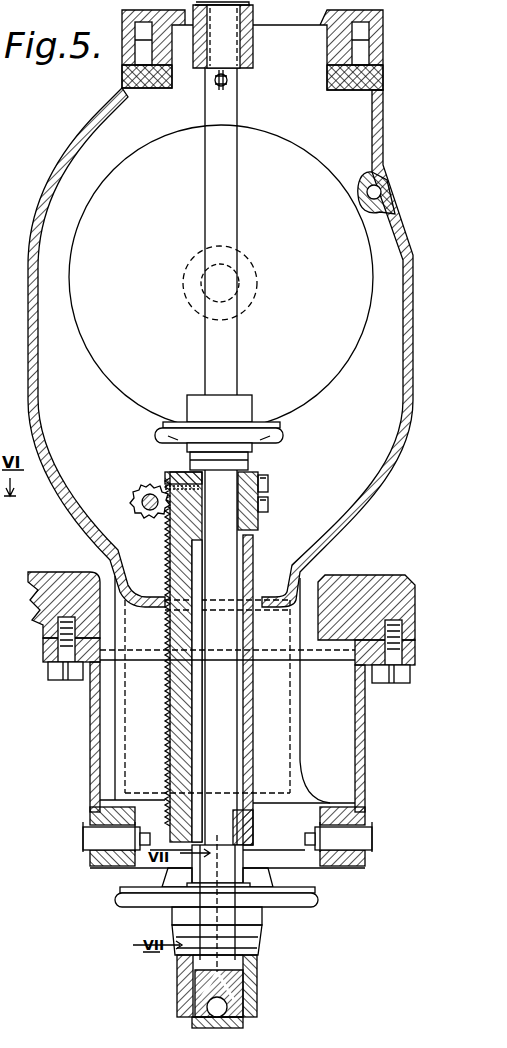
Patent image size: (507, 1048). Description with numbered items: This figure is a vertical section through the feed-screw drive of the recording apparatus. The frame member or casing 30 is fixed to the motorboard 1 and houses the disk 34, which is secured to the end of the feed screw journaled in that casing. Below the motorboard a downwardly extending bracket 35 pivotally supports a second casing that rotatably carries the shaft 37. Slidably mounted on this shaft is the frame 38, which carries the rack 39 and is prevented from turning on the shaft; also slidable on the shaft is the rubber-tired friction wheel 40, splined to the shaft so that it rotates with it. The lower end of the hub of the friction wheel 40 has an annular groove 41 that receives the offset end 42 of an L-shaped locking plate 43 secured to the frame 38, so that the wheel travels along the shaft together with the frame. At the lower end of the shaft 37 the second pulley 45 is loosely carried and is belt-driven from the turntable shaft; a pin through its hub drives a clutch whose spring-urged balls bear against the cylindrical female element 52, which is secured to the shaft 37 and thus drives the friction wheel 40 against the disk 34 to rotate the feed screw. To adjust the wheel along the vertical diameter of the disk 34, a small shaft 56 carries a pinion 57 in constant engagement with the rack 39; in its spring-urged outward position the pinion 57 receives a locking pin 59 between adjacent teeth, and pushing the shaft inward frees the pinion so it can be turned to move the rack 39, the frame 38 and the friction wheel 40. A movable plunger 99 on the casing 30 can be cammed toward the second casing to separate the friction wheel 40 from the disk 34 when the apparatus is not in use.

The motorboard 1 is at (382, 585).
The frame member or casing 30 is at (100, 136).
The disk 34 is at (339, 370).
The downwardly extending bracket 35 is at (90, 770).
The shaft 37 is at (237, 212).
The frame 38 is at (256, 555).
The rack 39 is at (165, 572).
The rubber-tired friction wheel 40 is at (182, 420).
The annular groove 41 is at (200, 460).
The offset end 42 is at (250, 458).
The L-shaped locking plate 43 is at (266, 515).
The second pulley 45 is at (136, 906).
The cylindrical female element 52 is at (256, 945).
The small shaft 56 is at (162, 518).
The pinion 57 is at (145, 476).
The pin 59 is at (131, 501).
The movable plunger 99 is at (389, 182).